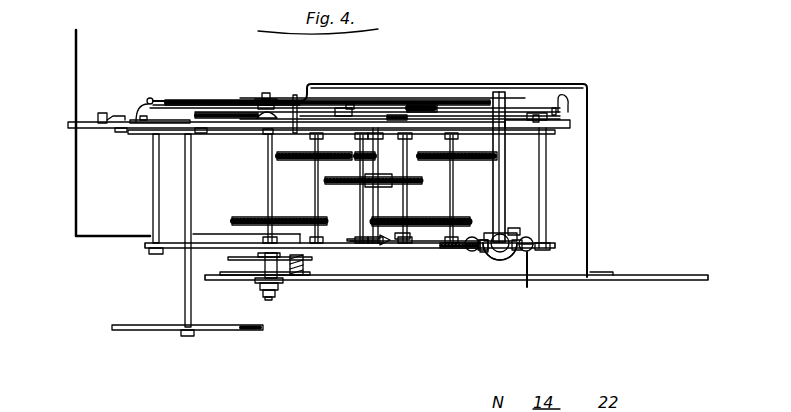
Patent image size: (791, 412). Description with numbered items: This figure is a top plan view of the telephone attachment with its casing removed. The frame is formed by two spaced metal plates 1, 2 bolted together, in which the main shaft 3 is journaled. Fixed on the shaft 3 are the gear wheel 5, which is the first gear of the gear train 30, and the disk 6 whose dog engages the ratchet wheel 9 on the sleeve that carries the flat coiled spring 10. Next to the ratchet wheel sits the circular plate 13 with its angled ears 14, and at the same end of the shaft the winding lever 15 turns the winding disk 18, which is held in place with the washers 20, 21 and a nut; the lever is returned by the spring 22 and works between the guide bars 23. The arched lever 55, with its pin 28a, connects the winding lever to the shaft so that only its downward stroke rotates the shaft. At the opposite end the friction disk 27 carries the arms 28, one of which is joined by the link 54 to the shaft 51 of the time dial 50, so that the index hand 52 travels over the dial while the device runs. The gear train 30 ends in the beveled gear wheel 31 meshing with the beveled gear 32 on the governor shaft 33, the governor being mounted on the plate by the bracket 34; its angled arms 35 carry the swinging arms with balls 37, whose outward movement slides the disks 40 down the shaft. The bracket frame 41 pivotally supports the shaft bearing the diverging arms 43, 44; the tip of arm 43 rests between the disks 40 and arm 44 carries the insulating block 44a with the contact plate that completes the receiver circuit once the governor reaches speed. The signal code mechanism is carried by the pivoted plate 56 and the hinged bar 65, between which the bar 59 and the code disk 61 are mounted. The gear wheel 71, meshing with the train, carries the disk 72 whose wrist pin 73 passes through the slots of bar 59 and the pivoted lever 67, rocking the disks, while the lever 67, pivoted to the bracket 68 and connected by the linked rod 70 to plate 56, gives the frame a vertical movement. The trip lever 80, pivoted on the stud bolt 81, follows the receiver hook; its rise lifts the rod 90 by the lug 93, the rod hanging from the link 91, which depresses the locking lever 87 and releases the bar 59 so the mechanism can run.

The metal plate 1 is at (572, 125).
The metal plate 2 is at (145, 252).
The shaft 3 is at (273, 206).
The gear wheel 5 is at (234, 220).
The disk 6 is at (232, 260).
The ratchet wheel 9 is at (240, 262).
The spring 10 is at (263, 260).
The circular plate 13 is at (226, 273).
The angled ears 14 is at (293, 288).
The winding lever 15 is at (658, 276).
The winding disk 18 is at (260, 297).
The washer 20 is at (287, 288).
The washer 21 is at (279, 289).
The spring 22 is at (305, 268).
The guide bars 23 is at (527, 288).
The friction disk 27 is at (265, 137).
The arms 28 is at (326, 147).
The pin 28a is at (295, 105).
The gear train 30 is at (421, 208).
The beveled gear wheel 31 is at (513, 229).
The beveled gear 32 is at (497, 254).
The shaft 33 is at (501, 238).
The bracket 34 is at (500, 143).
The angled arms 35 is at (483, 252).
The balls 37 is at (547, 229).
The disks 40 is at (505, 262).
The bracket frame 41 is at (370, 249).
The arm 43 is at (435, 250).
The arm 44 is at (401, 236).
The block of insulating material 44a is at (482, 207).
The time dial 50 is at (134, 330).
The shaft 51 is at (192, 186).
The index hand 52 is at (198, 134).
The link 54 is at (232, 103).
The arched lever 55 is at (425, 83).
The plate 56 is at (531, 112).
The bar 59 is at (344, 107).
The disk 61 is at (460, 99).
The hinged bar 65 is at (208, 100).
The pivoted lever 67 is at (500, 94).
The bracket 68 is at (547, 116).
The linked rod 70 is at (557, 113).
The gear wheel 71 is at (372, 197).
The disk 72 is at (385, 116).
The wrist pin 73 is at (350, 106).
The trip lever 80 is at (76, 238).
The stud bolt 81 is at (547, 229).
The locking lever 87 is at (98, 114).
The rod 90 is at (113, 116).
The link 91 is at (121, 133).
The lug 93 is at (77, 130).